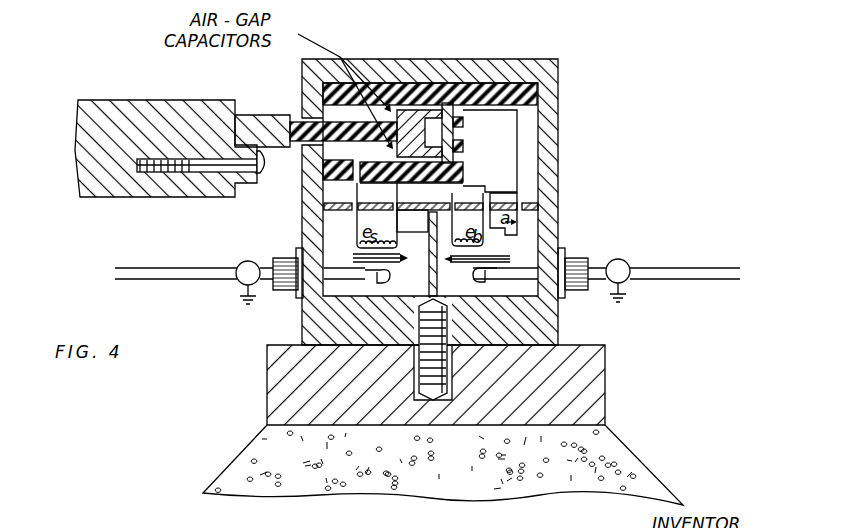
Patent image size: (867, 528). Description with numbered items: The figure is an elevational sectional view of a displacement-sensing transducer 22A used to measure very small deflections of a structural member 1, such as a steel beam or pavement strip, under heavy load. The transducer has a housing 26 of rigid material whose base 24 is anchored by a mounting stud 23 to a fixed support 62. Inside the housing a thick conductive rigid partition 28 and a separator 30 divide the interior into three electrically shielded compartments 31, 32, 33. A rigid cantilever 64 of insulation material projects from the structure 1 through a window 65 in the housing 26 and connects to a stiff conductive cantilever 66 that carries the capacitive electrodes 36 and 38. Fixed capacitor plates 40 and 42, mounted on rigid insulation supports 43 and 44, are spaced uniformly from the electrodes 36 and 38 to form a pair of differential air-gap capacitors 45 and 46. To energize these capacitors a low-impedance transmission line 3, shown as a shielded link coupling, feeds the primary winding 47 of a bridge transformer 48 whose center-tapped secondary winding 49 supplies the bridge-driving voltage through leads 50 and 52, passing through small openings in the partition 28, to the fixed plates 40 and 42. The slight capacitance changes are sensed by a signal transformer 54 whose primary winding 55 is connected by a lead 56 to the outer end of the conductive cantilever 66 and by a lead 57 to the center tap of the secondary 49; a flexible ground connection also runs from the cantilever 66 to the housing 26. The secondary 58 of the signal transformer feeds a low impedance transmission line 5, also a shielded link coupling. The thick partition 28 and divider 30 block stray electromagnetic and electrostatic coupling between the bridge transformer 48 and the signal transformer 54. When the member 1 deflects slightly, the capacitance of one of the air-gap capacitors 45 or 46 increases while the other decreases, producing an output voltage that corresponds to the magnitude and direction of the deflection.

The structural member 1 is at (180, 84).
The rigid cantilever 64 is at (243, 115).
The window 65 is at (300, 122).
The stiff conductive cantilever 66 is at (340, 115).
The displacement-sensing transducer 22A is at (435, 189).
The rigid insulation support 43 is at (533, 107).
The sensing compartment 31 is at (548, 128).
The housing 26 is at (569, 189).
The compartment 32 is at (333, 222).
The base 24 is at (548, 323).
The air-gap capacitor 45 is at (407, 83).
The air-gap capacitor 46 is at (396, 155).
The fixed capacitor plate 40 is at (446, 100).
The capacitor plate 36 is at (463, 123).
The capacitor plate 38 is at (464, 147).
The rigid insulation support 44 is at (470, 177).
The rigid partition 28 is at (490, 155).
The fixed capacitor plate 42 is at (410, 181).
The compartment 33 is at (535, 207).
The lead 52 is at (462, 200).
The lead 56 is at (357, 215).
The primary winding 55 is at (388, 246).
The lead 57 is at (412, 223).
The signal transformer 54 is at (391, 272).
The secondary winding 58 is at (383, 275).
The separator 30 is at (432, 280).
The lead 50 is at (472, 222).
The center-tapped secondary winding 49 is at (470, 248).
The primary winding 47 is at (478, 278).
The bridge transformer 48 is at (525, 258).
The low impedance transmission line 5 is at (250, 258).
The low-impedance transmission line 3 is at (626, 253).
The fixed support 62 is at (590, 345).
The mounting stud 23 is at (432, 380).